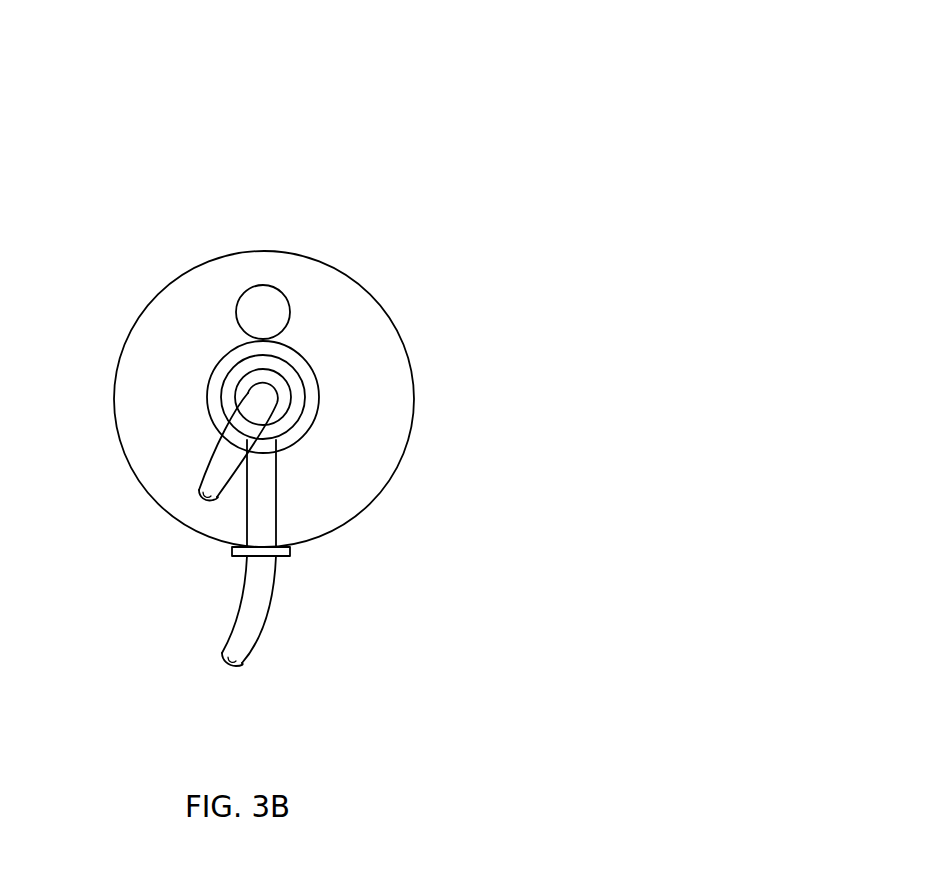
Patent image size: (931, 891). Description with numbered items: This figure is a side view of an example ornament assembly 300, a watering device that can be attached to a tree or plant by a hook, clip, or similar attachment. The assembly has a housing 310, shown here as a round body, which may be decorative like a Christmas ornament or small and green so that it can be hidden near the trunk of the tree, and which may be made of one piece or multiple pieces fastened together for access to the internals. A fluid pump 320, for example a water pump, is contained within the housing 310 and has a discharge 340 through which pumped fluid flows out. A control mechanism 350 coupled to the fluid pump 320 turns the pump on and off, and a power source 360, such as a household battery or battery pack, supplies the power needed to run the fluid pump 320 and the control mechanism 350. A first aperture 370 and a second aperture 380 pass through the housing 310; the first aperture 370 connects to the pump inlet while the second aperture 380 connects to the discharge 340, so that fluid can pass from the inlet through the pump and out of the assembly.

The ornament assembly 300 is at (412, 113).
The housing 310 is at (305, 262).
The fluid pump 320 is at (287, 375).
The discharge 340 is at (277, 502).
The control mechanism 350 is at (208, 400).
The power source 360 is at (262, 297).
The first aperture 370 is at (248, 387).
The second aperture 380 is at (273, 552).